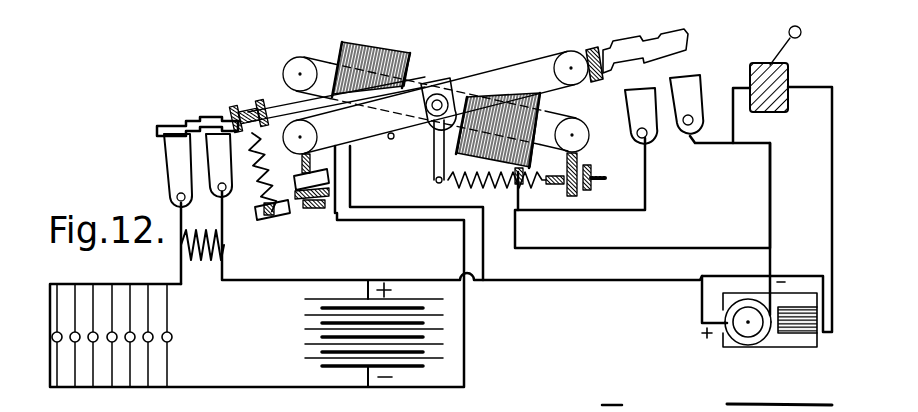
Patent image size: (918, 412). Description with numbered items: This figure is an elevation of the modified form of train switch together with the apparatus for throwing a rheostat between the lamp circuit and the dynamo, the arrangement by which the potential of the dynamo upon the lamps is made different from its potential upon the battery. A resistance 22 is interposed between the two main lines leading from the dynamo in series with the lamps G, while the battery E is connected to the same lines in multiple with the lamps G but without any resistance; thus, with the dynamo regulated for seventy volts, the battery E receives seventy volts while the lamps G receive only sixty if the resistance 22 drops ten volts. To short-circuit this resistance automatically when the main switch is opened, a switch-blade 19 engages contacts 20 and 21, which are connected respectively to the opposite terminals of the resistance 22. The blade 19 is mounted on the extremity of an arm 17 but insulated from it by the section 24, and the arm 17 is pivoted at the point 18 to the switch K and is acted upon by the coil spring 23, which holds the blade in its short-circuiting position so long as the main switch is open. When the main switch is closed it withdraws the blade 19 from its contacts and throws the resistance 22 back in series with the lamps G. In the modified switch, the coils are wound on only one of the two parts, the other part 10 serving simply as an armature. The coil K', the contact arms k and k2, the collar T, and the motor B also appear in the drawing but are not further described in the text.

The armature part 10 is at (537, 60).
The arm 17 is at (286, 108).
The pivot point 18 is at (447, 93).
The switch-blade 19 is at (189, 125).
The contact 20 is at (170, 153).
The contact 21 is at (216, 154).
The resistance 22 is at (206, 263).
The coil spring 23 is at (266, 187).
The insulating section 24 is at (247, 108).
The switch K is at (371, 61).
The lower coil K' is at (517, 137).
The contact arm k is at (641, 118).
The contact arm k2 is at (689, 100).
The collar T is at (604, 52).
The motor B is at (775, 341).
The battery E is at (318, 333).
The lamps G is at (152, 347).